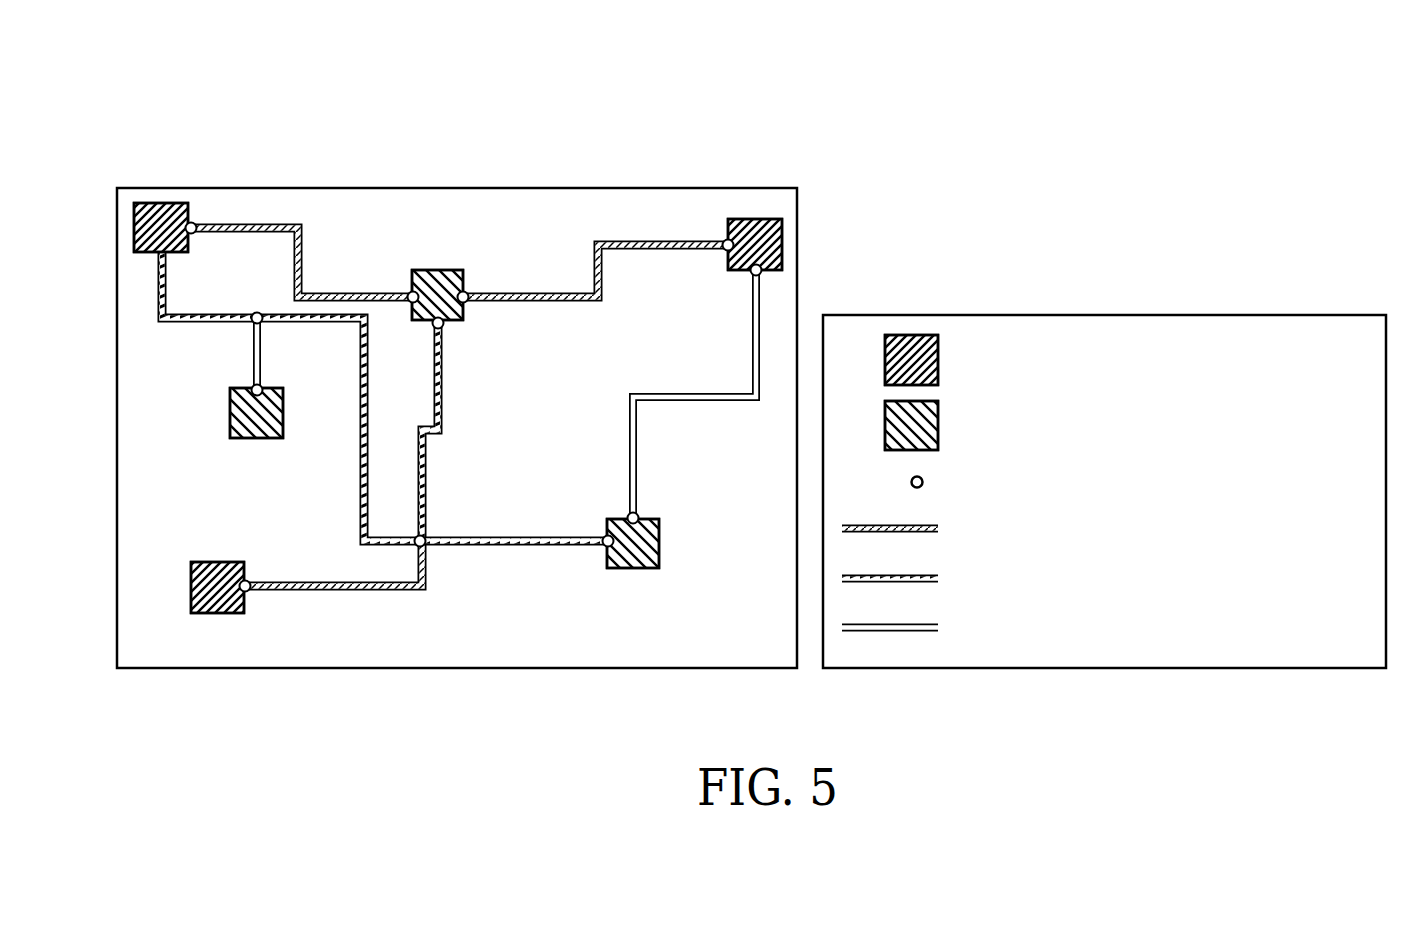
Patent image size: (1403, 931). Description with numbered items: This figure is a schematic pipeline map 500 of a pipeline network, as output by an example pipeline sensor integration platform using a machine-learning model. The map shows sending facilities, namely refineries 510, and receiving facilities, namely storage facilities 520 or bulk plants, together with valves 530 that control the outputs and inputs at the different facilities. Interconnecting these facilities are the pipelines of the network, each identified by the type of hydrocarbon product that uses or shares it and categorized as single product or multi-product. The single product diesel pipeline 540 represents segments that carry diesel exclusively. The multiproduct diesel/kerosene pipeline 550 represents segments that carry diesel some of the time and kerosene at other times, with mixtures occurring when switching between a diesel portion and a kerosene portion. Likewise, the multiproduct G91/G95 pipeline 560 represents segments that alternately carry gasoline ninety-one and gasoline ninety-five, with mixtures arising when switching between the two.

The pipeline map 500 is at (328, 75).
The refinery 510 is at (217, 561).
The storage facility 520 is at (637, 570).
The valve 530 is at (628, 514).
The single product diesel pipeline 540 is at (553, 301).
The multiproduct diesel/kerosene pipeline 550 is at (359, 484).
The multiproduct G91/G95 pipeline 560 is at (710, 400).